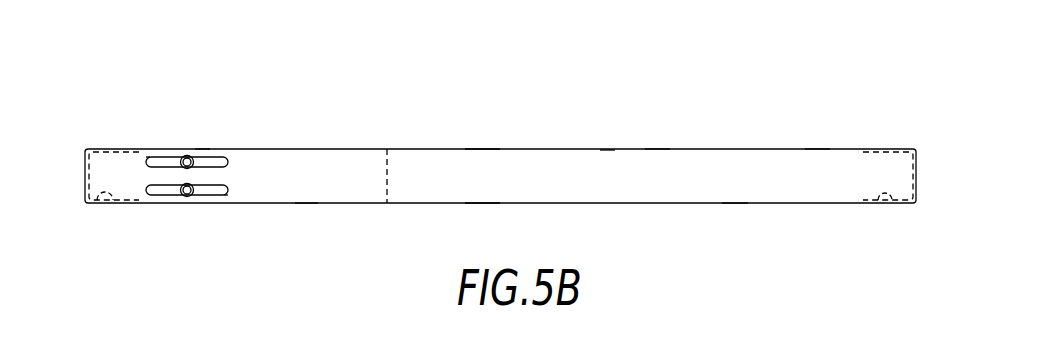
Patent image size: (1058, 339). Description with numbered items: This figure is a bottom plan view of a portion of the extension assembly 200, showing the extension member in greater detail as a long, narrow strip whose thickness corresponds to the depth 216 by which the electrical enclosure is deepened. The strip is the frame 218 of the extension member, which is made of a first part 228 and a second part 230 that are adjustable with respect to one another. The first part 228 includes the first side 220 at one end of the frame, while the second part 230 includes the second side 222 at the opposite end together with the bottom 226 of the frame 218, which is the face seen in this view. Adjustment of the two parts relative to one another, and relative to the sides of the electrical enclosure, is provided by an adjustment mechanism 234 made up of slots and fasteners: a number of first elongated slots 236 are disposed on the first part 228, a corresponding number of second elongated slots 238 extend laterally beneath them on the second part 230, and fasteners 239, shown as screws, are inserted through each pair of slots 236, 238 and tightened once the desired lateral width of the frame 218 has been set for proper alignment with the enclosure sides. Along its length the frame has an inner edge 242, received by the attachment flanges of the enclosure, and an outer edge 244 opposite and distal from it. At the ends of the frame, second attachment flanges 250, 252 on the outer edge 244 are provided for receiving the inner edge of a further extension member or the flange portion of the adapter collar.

The extension assembly 200 is at (500, 226).
The depth 216 is at (796, 105).
The frame 218 is at (740, 262).
The first side 220 is at (84, 168).
The second side 222 is at (917, 165).
The bottom 226 is at (600, 226).
The first part 228 is at (325, 243).
The second part 230 is at (631, 82).
The adjustment mechanism 234 is at (243, 95).
The first elongated slot 236 is at (156, 157).
The second elongated slot 238 is at (163, 160).
The fastener 239 is at (187, 155).
The inner edge 242 is at (477, 149).
The outer edge 244 is at (499, 231).
The second attachment flange 250 is at (80, 232).
The second attachment flange 252 is at (893, 228).